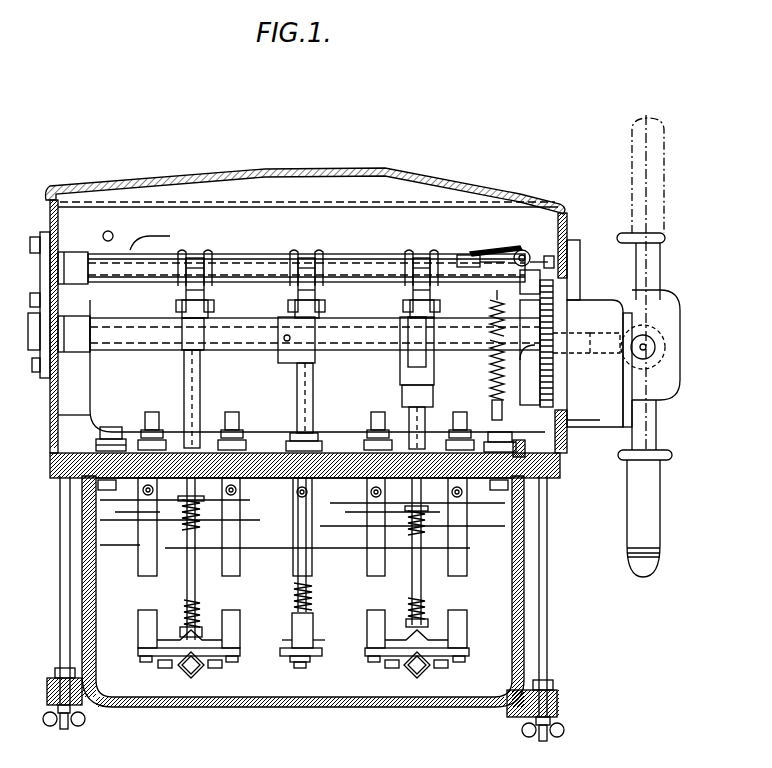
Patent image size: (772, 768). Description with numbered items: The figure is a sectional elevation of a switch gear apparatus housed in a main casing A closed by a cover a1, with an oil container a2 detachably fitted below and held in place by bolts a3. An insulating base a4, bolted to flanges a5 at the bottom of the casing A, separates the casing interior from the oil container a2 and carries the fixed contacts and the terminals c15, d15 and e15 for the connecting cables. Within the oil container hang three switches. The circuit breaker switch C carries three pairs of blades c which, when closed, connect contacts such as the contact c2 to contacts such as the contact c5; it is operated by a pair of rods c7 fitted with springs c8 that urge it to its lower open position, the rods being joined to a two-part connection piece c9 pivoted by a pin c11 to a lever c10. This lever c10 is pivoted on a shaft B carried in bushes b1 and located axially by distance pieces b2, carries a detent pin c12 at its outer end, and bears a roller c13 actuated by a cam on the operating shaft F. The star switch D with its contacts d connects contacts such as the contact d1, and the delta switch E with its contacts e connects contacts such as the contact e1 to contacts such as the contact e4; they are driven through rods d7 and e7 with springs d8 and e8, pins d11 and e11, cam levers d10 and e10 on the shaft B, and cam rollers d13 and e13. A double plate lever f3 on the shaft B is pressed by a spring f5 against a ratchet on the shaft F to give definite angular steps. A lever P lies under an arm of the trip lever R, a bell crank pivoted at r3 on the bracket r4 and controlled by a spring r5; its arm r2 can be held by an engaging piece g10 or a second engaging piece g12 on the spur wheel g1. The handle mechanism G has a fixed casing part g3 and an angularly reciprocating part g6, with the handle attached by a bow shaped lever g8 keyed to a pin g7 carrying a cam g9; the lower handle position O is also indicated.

The main casing A is at (50, 417).
The cover a1 is at (292, 170).
The oil container a2 is at (500, 632).
The bolts a3 is at (62, 590).
The insulating base a4 is at (80, 478).
The flanges a5 is at (108, 438).
The shaft B is at (238, 272).
The bushes b1 is at (72, 258).
The distance pieces b2 is at (353, 262).
The operating shaft F is at (258, 344).
The cam lever e10 is at (208, 250).
The pin e11 is at (210, 303).
The cam roller e13 is at (190, 270).
The rod e7 is at (186, 578).
The spring e8 is at (200, 608).
The terminal e15 is at (152, 416).
The contact e4 is at (146, 550).
The contact e1 is at (231, 560).
The contacts e is at (140, 630).
The three-pair contact switch E is at (162, 658).
The cam lever d10 is at (320, 250).
The pin d11 is at (322, 302).
The cam roller d13 is at (300, 272).
The rod d7 is at (297, 590).
The spring d8 is at (296, 604).
The terminal d15 is at (300, 430).
The contact d1 is at (305, 546).
The contacts d is at (308, 632).
The switch D is at (318, 660).
The lever c10 is at (432, 250).
The pin c11 is at (436, 302).
The roller c13 is at (412, 272).
The detent pin c12 is at (412, 350).
The two-part connection piece c9 is at (402, 385).
The rods c7 is at (422, 592).
The springs c8 is at (410, 605).
The terminal c15 is at (378, 416).
The contact c5 is at (370, 560).
The contact c2 is at (462, 562).
The blades c is at (372, 628).
The circuit breaker switch C is at (440, 660).
The lever P is at (462, 255).
The trip lever R is at (506, 248).
The arm r2 is at (556, 290).
The pivot r3 is at (548, 262).
The bracket r4 is at (524, 250).
The spring r5 is at (491, 248).
The double plate lever f3 is at (490, 294).
The spring f5 is at (495, 372).
The spur wheel g1 is at (553, 395).
The fixed part g3 is at (612, 408).
The angularly reciprocating part g6 is at (662, 290).
The pin g7 is at (656, 347).
The bow shaped lever g8 is at (646, 392).
The cam g9 is at (665, 338).
The engaging piece g10 is at (556, 336).
The second engaging piece g12 is at (532, 368).
The handle mechanism G is at (637, 282).
The lower handle O is at (645, 488).